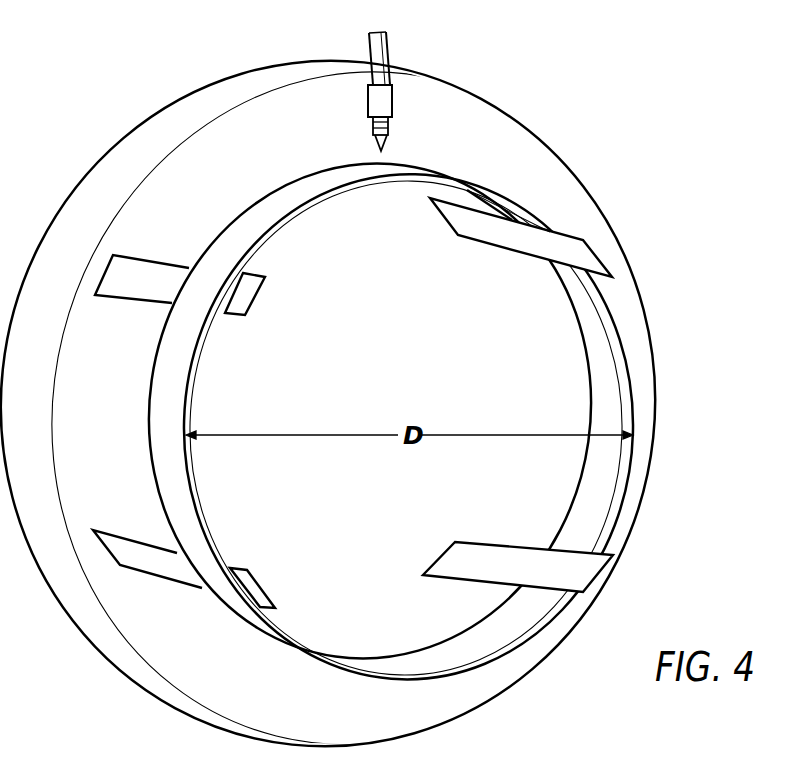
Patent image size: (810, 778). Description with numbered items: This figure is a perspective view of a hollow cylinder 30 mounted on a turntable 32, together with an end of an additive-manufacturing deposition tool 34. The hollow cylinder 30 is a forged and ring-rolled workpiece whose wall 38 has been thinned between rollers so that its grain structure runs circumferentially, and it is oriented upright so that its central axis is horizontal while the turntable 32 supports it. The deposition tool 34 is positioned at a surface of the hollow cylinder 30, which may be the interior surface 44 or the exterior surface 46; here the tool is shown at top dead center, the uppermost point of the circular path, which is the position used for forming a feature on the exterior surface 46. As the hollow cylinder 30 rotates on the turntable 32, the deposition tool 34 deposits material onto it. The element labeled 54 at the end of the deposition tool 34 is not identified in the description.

The hollow cylinder 30 is at (232, 624).
The turntable 32 is at (113, 145).
The additive-manufacturing deposition tool 34 is at (380, 91).
The wall 38 is at (193, 390).
The interior surface 44 is at (407, 653).
The exterior surface 46 is at (259, 638).
The nozzle tip 54 is at (378, 148).